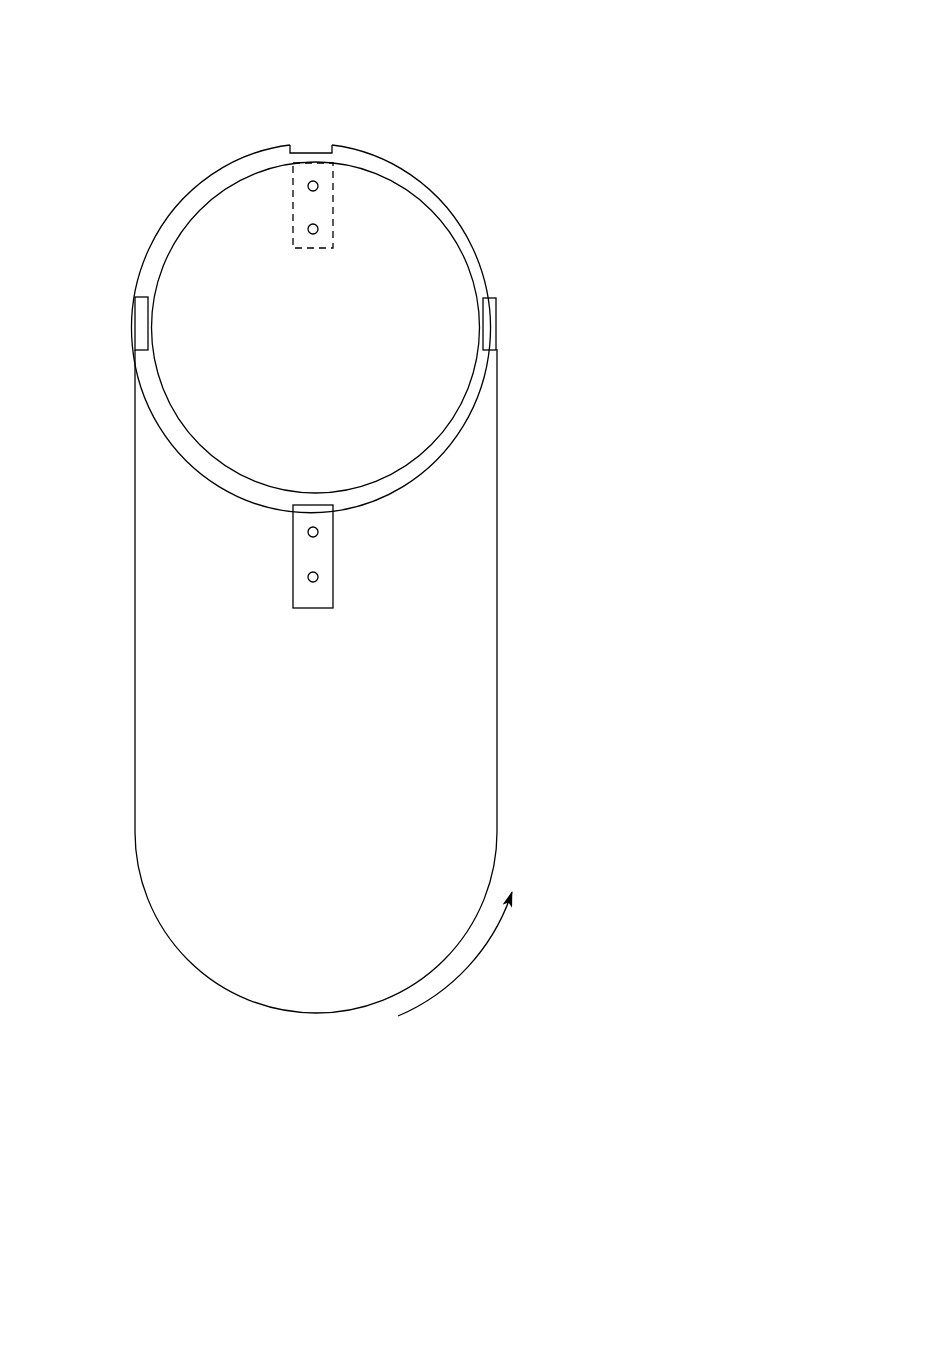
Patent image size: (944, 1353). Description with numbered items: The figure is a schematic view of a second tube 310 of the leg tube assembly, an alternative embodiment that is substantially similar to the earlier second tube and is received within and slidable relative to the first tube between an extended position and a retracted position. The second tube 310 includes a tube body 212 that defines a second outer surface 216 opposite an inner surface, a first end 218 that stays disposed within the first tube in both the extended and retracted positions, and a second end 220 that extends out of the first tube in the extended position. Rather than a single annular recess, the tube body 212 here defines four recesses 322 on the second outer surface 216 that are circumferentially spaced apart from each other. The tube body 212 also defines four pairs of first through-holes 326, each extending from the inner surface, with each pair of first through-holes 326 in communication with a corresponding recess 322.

The second tube 310 is at (490, 66).
The second end 220 is at (137, 188).
The tube body 212 is at (97, 603).
The second outer surface 216 is at (481, 722).
The first end 218 is at (160, 1007).
The recesses 322 is at (310, 143).
The first through-holes 326 is at (320, 182).